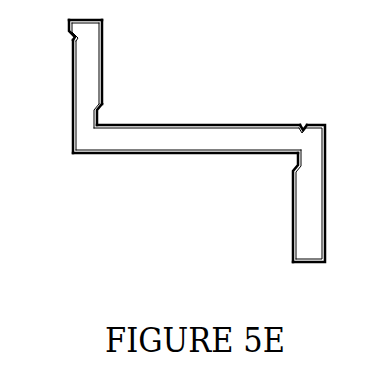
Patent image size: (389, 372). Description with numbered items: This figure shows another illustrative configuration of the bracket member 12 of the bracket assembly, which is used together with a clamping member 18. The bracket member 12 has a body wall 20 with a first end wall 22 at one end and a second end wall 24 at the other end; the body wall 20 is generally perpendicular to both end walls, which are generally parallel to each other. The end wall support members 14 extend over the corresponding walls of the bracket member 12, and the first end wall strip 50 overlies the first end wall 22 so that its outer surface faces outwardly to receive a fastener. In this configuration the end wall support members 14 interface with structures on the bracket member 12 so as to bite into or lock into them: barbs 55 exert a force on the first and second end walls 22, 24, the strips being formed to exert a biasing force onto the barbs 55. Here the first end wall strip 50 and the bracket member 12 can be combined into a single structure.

The bracket member 12 is at (127, 177).
The end wall support members 14 is at (103, 45).
The clamping member 18 is at (346, 175).
The body wall 20 is at (185, 168).
The first end wall 22 is at (61, 73).
The second end wall 24 is at (315, 205).
The first end wall strip 50 is at (103, 80).
The barbs 55 is at (72, 39).